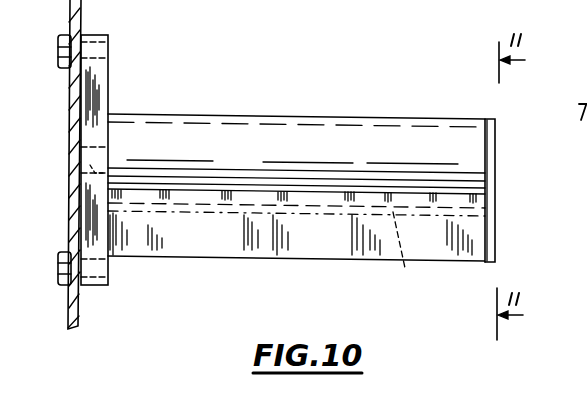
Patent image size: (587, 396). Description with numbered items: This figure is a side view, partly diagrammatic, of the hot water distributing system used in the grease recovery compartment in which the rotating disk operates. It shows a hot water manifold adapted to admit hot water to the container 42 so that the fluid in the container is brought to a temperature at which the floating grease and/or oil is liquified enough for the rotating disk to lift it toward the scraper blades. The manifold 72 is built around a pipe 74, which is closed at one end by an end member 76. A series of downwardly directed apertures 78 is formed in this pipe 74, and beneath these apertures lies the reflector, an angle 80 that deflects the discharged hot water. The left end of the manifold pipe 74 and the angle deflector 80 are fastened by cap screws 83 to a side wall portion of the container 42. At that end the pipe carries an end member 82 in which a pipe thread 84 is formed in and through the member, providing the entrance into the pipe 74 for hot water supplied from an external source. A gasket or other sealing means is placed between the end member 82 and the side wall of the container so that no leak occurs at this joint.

The container 42 is at (78, 117).
The heater assembly 72 is at (250, 74).
The pipe 74 is at (326, 153).
The end member 76 is at (495, 209).
The downwardly directed apertures 78 is at (411, 254).
The angle 80 is at (290, 228).
The end member 82 is at (100, 82).
The cap screws 83 is at (63, 257).
The pipe thread 84 is at (83, 162).